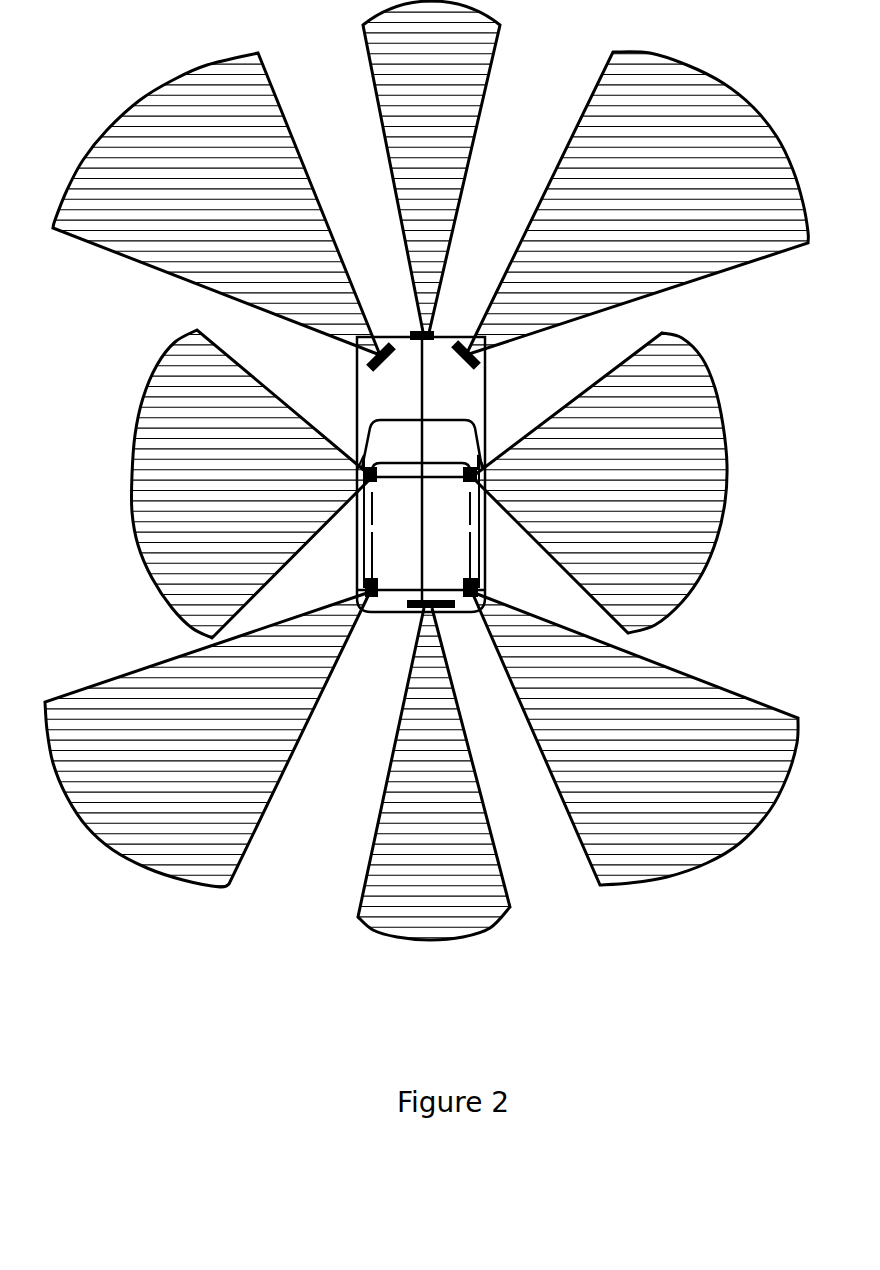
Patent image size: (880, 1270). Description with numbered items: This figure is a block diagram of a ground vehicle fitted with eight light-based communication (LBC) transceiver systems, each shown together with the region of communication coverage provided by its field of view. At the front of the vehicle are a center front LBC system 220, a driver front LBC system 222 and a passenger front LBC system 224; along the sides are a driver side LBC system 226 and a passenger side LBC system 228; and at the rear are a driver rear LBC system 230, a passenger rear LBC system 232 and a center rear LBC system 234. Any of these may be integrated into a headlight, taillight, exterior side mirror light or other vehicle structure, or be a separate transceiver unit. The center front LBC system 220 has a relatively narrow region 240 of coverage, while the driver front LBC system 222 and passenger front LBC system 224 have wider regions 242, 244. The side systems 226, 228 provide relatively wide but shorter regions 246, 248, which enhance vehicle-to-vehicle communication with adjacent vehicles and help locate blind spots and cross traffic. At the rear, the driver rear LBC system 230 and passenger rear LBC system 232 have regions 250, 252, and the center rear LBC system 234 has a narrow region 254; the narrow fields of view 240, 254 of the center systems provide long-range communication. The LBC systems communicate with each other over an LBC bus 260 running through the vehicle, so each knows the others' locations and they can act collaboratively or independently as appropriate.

The center front LBC system 220 is at (421, 327).
The driver front LBC system 222 is at (349, 360).
The passenger front LBC system 224 is at (464, 324).
The driver side LBC system 226 is at (386, 506).
The passenger side LBC system 228 is at (454, 495).
The driver rear LBC system 230 is at (365, 618).
The passenger rear LBC system 232 is at (497, 590).
The center rear LBC system 234 is at (455, 619).
The region of communication coverage 240 is at (440, 474).
The region of communication coverage 242 is at (440, 475).
The region of communication coverage 244 is at (440, 475).
The region of communication coverage 246 is at (440, 475).
The region of communication coverage 248 is at (440, 475).
The region of communication coverage 250 is at (440, 475).
The region of communication coverage 252 is at (440, 475).
The region of communication coverage 254 is at (440, 475).
The LBC bus 260 is at (436, 399).